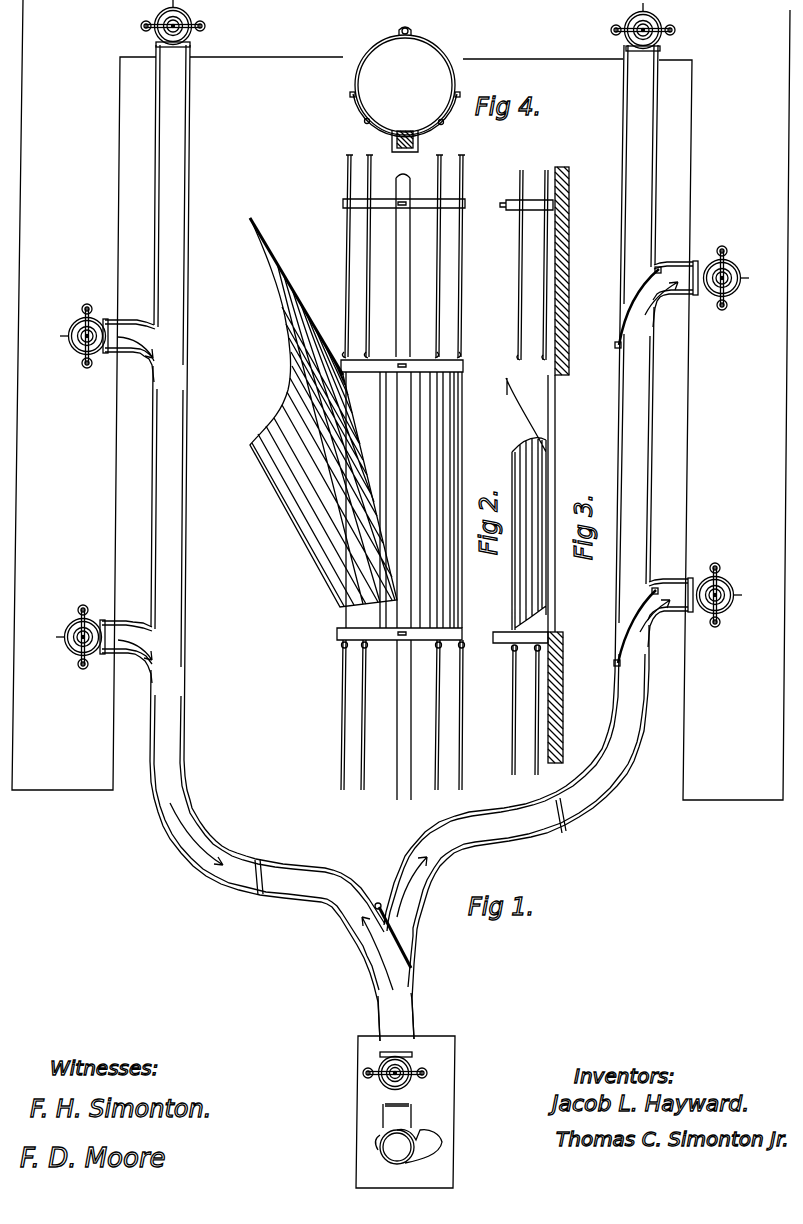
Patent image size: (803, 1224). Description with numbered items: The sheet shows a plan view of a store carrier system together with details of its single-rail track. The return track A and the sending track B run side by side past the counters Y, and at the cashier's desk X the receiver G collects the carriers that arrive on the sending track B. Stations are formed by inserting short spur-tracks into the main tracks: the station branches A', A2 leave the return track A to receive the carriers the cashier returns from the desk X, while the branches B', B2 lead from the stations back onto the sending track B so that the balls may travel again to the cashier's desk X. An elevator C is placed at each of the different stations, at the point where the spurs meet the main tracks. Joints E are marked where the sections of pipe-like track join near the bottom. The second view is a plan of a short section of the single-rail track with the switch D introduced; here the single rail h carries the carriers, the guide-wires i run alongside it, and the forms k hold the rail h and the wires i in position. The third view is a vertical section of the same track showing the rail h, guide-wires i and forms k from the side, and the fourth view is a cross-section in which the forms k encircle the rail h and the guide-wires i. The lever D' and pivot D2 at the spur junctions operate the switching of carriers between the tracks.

In FIG. 1, the return track A is at (467, 543).
In FIG. 1, the station branch or spur from return track A' is at (668, 619).
In FIG. 1, the station branch or spur from return track A2 is at (669, 300).
In FIG. 1, the sending track B is at (266, 543).
In FIG. 1, the branch from station to main track B' is at (127, 655).
In FIG. 1, the branch from station to main track B2 is at (130, 354).
In FIG. 1, the elevator at the stations C is at (403, 545).
In FIG. 1, the switch D is at (389, 935).
In FIG. 2, the switch D is at (356, 423).
In FIG. 1, the damper lever D' is at (638, 466).
In FIG. 1, the damper pivot D2 is at (637, 461).
In FIG. 1, the pipe joint E is at (270, 856).
In FIG. 1, the receiver at the cashier's desk G is at (401, 1134).
In FIG. 1, the cashier's desk X is at (405, 1112).
In FIG. 1, the counters Y is at (401, 400).
In FIG. 2, the single rail or track h is at (394, 487).
In FIG. 3, the single rail or track h is at (544, 465).
In FIG. 4, the single rail or track h is at (405, 131).
In FIG. 2, the guide-wires i is at (394, 472).
In FIG. 3, the guide-wires i is at (524, 472).
In FIG. 4, the guide-wires i is at (405, 105).
In FIG. 2, the forms for holding the rail and wires k is at (410, 192).
In FIG. 3, the forms for holding the rail and wires k is at (567, 193).
In FIG. 4, the forms for holding the rail and wires k is at (440, 50).